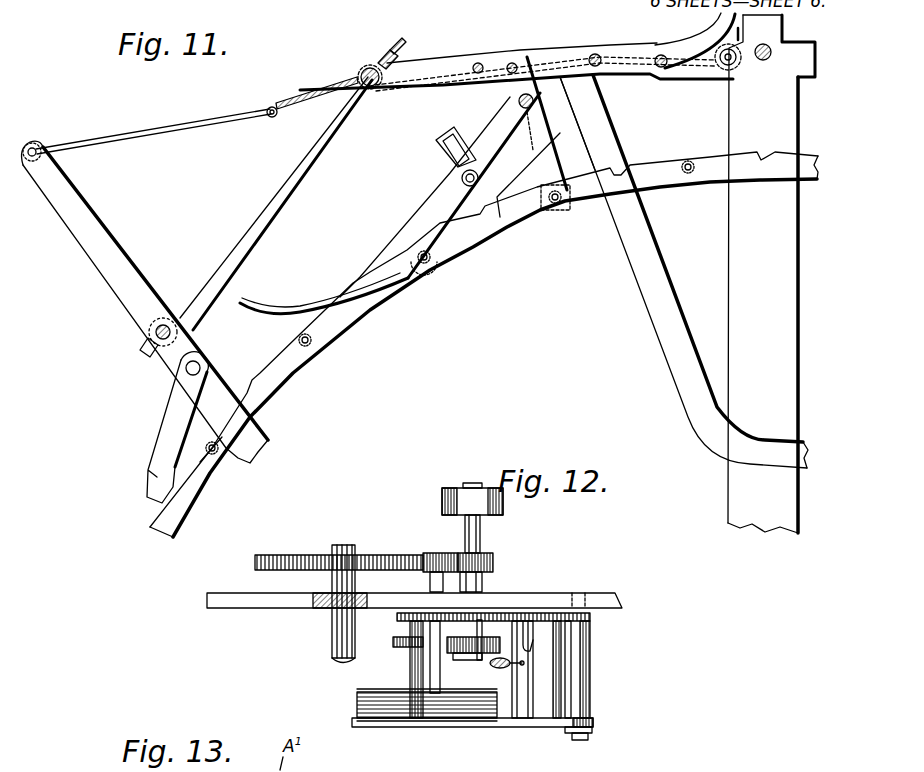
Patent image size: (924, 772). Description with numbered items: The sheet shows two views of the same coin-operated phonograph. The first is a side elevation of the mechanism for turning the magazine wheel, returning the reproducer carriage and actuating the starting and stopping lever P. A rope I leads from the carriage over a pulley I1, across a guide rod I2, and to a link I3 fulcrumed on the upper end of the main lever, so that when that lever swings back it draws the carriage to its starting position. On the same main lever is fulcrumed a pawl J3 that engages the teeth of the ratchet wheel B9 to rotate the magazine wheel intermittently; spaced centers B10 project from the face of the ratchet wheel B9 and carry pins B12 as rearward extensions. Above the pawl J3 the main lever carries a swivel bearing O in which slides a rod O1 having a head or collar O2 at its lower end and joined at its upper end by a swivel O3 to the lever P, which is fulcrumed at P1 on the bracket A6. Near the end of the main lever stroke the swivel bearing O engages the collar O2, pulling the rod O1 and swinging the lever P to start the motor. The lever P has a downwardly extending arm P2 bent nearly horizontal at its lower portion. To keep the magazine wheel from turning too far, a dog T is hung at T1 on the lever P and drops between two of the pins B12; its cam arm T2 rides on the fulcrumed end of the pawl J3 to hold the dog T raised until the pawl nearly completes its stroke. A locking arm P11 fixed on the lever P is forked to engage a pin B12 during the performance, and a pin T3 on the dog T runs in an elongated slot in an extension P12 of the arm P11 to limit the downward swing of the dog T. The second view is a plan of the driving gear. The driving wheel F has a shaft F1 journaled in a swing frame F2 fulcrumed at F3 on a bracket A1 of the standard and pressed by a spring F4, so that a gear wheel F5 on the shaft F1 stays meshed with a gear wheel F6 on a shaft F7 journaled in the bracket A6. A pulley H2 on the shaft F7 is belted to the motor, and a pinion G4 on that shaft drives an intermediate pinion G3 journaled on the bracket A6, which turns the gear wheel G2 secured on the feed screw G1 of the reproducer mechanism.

In FIG. 11, the rope I is at (313, 112).
In FIG. 11, the pulley I1 is at (723, 68).
In FIG. 11, the guide rod I2 is at (630, 46).
In FIG. 11, the link I3 is at (181, 131).
In FIG. 11, the swivel bearing O is at (150, 333).
In FIG. 11, the rod O1 is at (271, 205).
In FIG. 11, the head or collar O2 is at (157, 352).
In FIG. 11, the swivel O3 is at (361, 77).
In FIG. 11, the pawl J3 is at (170, 432).
In FIG. 11, the ratchet wheel B9 is at (470, 243).
In FIG. 11, the centers B10 is at (208, 459).
In FIG. 11, the pins B12 is at (313, 340).
In FIG. 11, the dog T is at (443, 200).
In FIG. 11, the pivot of dog T1 is at (518, 101).
In FIG. 11, the cam arm T2 is at (324, 293).
In FIG. 11, the pin T3 is at (455, 174).
In FIG. 11, the starting and stopping lever P is at (562, 57).
In FIG. 11, the fulcrum P1 is at (659, 72).
In FIG. 11, the arm P2 is at (680, 357).
In FIG. 11, the locking arm P11 is at (540, 134).
In FIG. 11, the extension P12 is at (453, 137).
In FIG. 11, the bracket A1 is at (740, 508).
In FIG. 12, the bracket A1 is at (320, 610).
In FIG. 11, the bracket A6 is at (810, 42).
In FIG. 12, the bracket A6 is at (618, 598).
In FIG. 12, the pulley H2 is at (463, 486).
In FIG. 12, the feed screw G1 is at (343, 663).
In FIG. 12, the gear wheel G2 is at (257, 564).
In FIG. 12, the intermediate pinion G3 is at (437, 549).
In FIG. 12, the pinion G4 is at (490, 559).
In FIG. 12, the driving wheel F is at (390, 719).
In FIG. 12, the shaft F1 is at (432, 661).
In FIG. 12, the swing frame F2 is at (509, 728).
In FIG. 12, the fulcrum F3 is at (580, 741).
In FIG. 12, the spring F4 is at (497, 669).
In FIG. 12, the gear wheel F5 is at (397, 644).
In FIG. 12, the gear wheel F6 is at (493, 637).
In FIG. 12, the shaft F7 is at (480, 620).